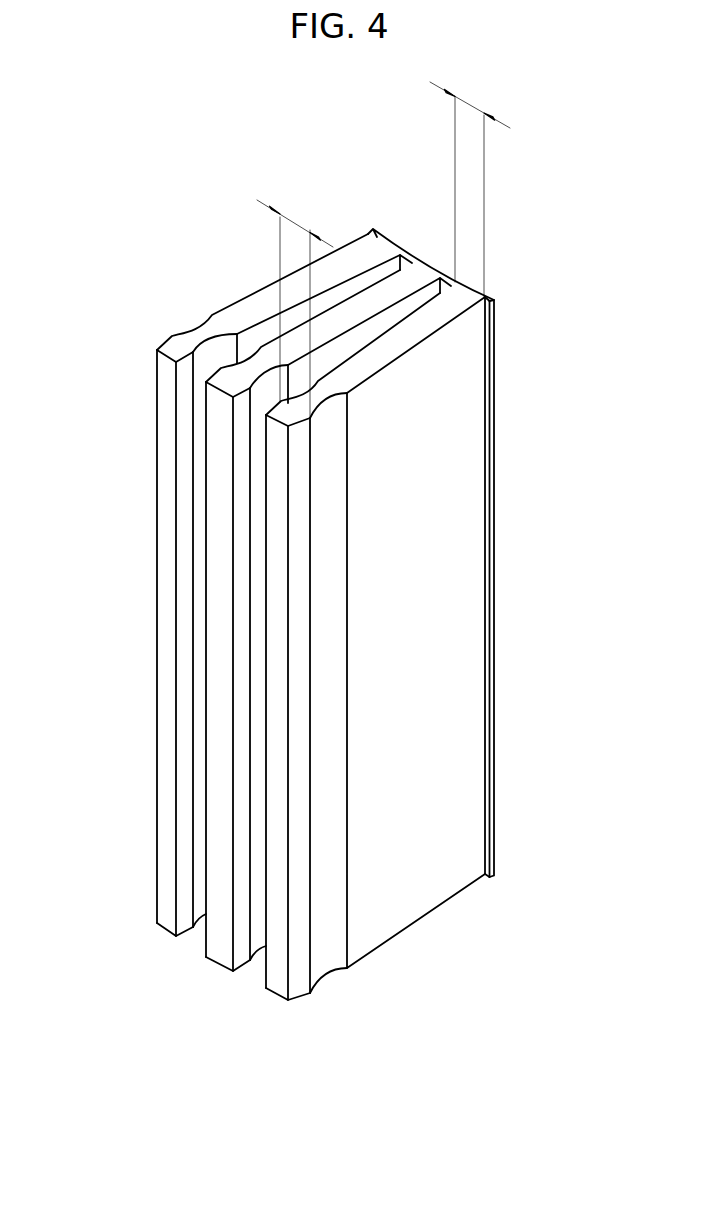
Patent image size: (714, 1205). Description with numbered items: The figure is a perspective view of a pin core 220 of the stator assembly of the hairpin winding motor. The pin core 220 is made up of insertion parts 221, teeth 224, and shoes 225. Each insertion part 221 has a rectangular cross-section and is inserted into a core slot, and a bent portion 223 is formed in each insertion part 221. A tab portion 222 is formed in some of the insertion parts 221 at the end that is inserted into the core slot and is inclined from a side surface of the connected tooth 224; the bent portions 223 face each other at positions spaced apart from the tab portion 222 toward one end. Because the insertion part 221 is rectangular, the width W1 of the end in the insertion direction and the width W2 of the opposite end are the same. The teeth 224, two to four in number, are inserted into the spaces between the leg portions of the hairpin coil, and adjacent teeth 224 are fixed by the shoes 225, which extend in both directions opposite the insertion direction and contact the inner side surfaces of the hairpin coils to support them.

The pin core 220 is at (152, 191).
The insertion part 221 is at (173, 350).
The tab portion 222 is at (301, 1002).
The bent portion 223 is at (327, 978).
The tooth 224 is at (444, 904).
The shoe 225 is at (408, 252).
The width of one end W1 is at (295, 306).
The width of the other end W2 is at (470, 185).